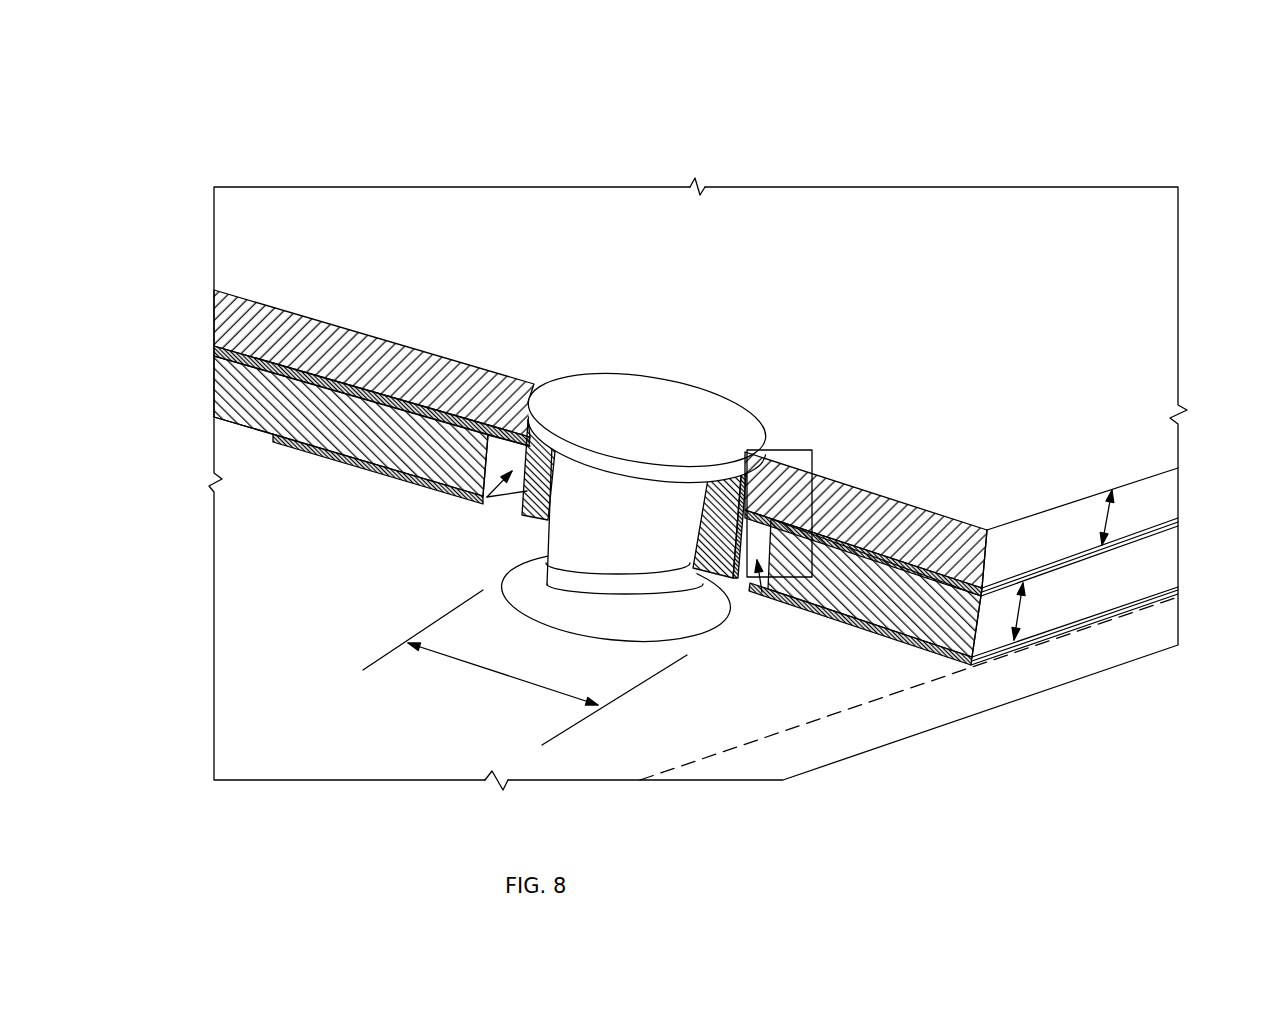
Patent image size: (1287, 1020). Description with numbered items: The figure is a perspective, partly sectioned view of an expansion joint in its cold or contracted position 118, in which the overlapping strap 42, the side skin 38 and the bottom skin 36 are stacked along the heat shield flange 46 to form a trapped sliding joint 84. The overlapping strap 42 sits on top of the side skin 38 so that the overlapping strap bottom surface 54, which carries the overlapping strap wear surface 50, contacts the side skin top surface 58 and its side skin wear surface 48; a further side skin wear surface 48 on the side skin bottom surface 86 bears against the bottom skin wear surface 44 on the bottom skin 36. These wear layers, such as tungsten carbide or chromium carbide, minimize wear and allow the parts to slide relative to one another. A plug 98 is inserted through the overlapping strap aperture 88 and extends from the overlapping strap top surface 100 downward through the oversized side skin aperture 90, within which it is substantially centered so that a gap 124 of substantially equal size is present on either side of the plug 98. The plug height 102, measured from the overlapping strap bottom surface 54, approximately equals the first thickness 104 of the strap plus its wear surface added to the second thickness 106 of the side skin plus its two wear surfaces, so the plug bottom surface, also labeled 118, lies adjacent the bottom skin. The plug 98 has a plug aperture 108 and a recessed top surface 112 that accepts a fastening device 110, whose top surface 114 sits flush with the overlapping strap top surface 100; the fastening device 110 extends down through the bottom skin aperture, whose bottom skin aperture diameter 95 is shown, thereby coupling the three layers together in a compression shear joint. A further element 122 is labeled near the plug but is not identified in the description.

The trapped sliding joint 84 is at (214, 128).
The cold/contracted position 118 is at (1070, 152).
The overlapping strap top surface 100 is at (1135, 284).
The overlapping strap 42 is at (1157, 355).
The overlapping strap wear surface 50 is at (231, 337).
The side skin wear surface 48 is at (222, 353).
The side skin bottom surface 86 is at (258, 428).
The side skin 38 is at (305, 415).
The side skin aperture 90 is at (500, 437).
The plug 98 is at (512, 447).
The gap 124 is at (487, 497).
The sleeve 122 is at (548, 518).
The fastening device 110 is at (562, 525).
The bottom skin aperture diameter 95 is at (483, 668).
The top surface of the fastening device 114 is at (602, 403).
The overlapping strap aperture 88 is at (718, 393).
The recessed top surface 112 is at (764, 450).
The plug height 102 is at (800, 513).
The first thickness 104 is at (1117, 517).
The overlapping strap bottom surface 54 is at (1177, 521).
The side skin top surface 58 is at (1160, 535).
The heat shield flange 46 is at (1142, 573).
The second thickness 106 is at (1043, 615).
The bottom skin wear surface 44 is at (943, 658).
The bottom skin 36 is at (832, 688).
The plug aperture 108 is at (708, 573).